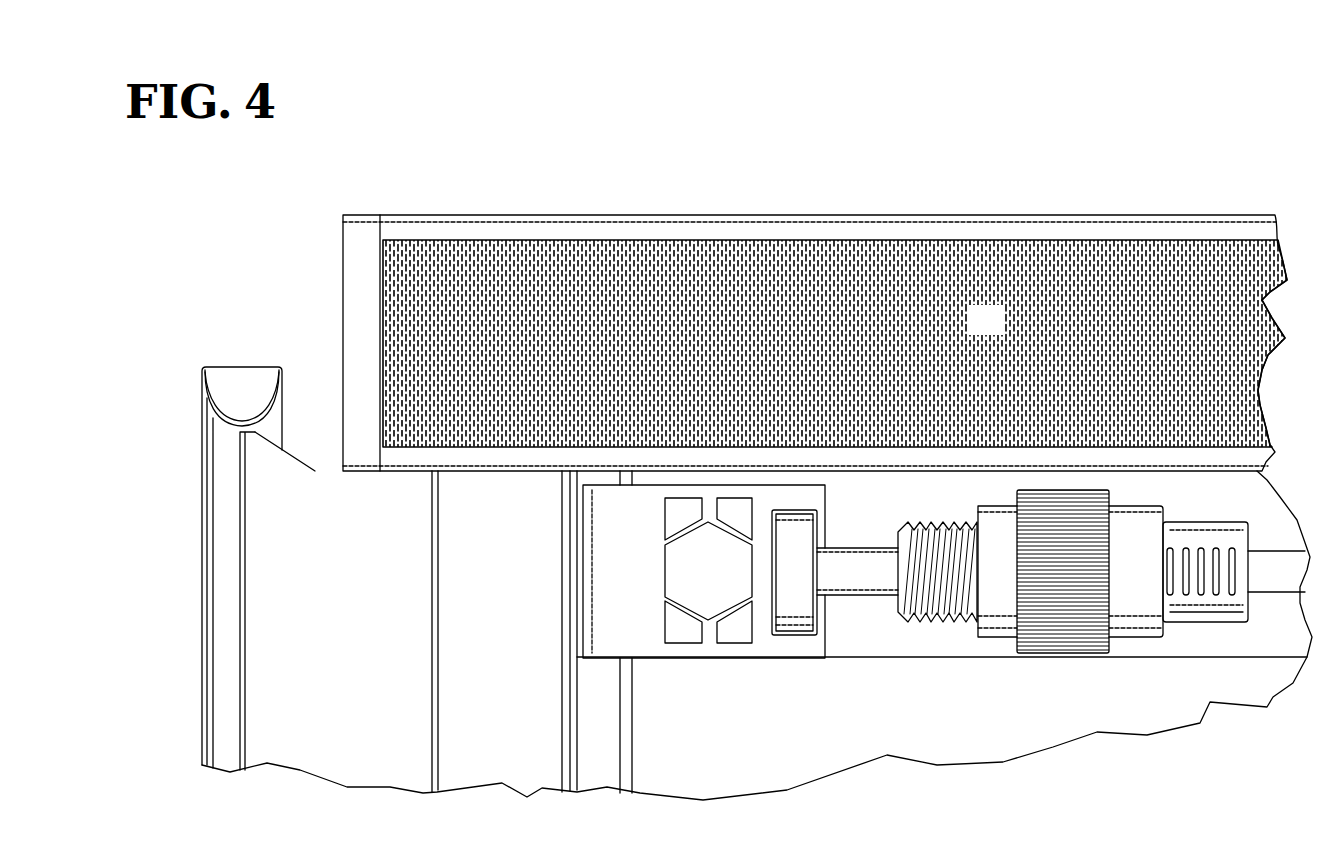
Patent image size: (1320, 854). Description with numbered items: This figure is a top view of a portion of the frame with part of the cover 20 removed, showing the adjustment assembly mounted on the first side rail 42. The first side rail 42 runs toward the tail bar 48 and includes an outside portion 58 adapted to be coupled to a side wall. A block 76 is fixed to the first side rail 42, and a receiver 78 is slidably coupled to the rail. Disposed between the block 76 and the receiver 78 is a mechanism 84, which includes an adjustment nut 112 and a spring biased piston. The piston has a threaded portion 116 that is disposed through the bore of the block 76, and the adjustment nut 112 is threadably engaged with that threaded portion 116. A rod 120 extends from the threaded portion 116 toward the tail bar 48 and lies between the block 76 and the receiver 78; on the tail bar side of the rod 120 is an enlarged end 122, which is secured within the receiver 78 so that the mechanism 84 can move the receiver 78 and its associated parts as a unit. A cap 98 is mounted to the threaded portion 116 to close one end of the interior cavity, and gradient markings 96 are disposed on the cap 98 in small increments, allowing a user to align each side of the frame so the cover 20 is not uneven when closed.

The cover 20 is at (356, 715).
The first side rail 42 is at (527, 455).
The tail bar 48 is at (225, 432).
The outside portion 58 is at (998, 331).
The block 76 is at (1145, 576).
The receiver 78 is at (640, 622).
The mechanism 84 is at (943, 613).
The gradient markings 96 is at (1232, 546).
The cap 98 is at (1207, 618).
The adjustment nut 112 is at (1060, 638).
The threaded portion 116 is at (920, 585).
The rod 120 is at (857, 587).
The enlarged end 122 is at (793, 610).